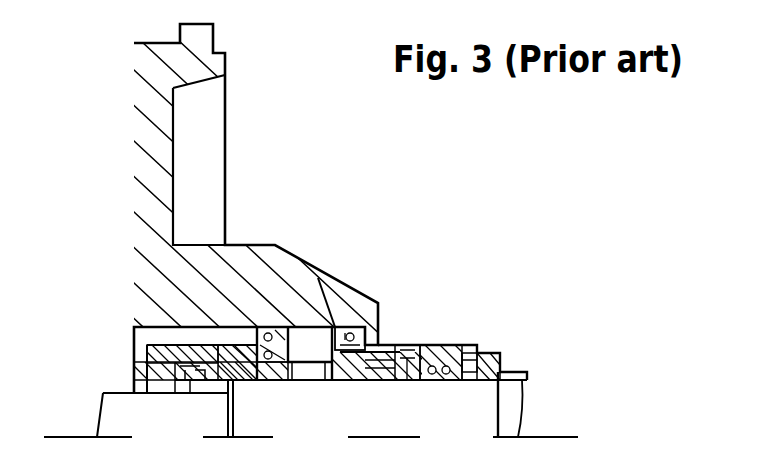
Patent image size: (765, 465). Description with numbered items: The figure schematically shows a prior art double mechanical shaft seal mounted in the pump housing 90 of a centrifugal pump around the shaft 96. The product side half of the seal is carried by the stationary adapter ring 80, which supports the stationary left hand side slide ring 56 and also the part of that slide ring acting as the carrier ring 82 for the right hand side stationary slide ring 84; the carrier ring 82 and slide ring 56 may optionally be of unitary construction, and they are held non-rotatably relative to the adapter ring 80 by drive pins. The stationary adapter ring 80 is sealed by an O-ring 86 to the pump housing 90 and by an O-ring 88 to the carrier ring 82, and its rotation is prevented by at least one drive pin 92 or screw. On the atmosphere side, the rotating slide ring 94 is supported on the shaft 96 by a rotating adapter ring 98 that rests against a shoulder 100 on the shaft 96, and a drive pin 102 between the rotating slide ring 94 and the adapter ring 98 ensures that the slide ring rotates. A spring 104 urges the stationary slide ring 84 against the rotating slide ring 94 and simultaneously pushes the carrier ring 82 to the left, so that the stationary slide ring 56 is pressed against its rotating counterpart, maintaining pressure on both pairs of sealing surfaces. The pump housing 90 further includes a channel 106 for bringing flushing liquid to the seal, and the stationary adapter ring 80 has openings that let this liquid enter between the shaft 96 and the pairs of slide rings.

The stationary left hand side slide ring 56 is at (228, 393).
The stationary adapter ring 80 is at (332, 300).
The carrier ring 82 is at (372, 381).
The stationary right hand side slide ring 84 is at (432, 345).
The O-ring 86 is at (352, 327).
The O-ring 88 is at (385, 345).
The pump housing 90 is at (213, 270).
The drive pin 92 is at (410, 345).
The rotating slide ring 94 is at (470, 345).
The shaft 96 is at (482, 429).
The rotating adapter ring 98 is at (500, 358).
The shoulder 100 is at (505, 382).
The drive pin 102 is at (478, 353).
The spring 104 is at (392, 381).
The channel 106 is at (340, 293).